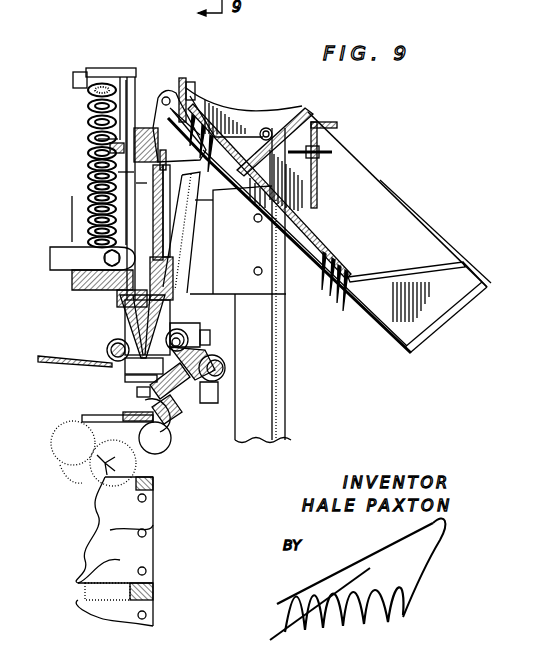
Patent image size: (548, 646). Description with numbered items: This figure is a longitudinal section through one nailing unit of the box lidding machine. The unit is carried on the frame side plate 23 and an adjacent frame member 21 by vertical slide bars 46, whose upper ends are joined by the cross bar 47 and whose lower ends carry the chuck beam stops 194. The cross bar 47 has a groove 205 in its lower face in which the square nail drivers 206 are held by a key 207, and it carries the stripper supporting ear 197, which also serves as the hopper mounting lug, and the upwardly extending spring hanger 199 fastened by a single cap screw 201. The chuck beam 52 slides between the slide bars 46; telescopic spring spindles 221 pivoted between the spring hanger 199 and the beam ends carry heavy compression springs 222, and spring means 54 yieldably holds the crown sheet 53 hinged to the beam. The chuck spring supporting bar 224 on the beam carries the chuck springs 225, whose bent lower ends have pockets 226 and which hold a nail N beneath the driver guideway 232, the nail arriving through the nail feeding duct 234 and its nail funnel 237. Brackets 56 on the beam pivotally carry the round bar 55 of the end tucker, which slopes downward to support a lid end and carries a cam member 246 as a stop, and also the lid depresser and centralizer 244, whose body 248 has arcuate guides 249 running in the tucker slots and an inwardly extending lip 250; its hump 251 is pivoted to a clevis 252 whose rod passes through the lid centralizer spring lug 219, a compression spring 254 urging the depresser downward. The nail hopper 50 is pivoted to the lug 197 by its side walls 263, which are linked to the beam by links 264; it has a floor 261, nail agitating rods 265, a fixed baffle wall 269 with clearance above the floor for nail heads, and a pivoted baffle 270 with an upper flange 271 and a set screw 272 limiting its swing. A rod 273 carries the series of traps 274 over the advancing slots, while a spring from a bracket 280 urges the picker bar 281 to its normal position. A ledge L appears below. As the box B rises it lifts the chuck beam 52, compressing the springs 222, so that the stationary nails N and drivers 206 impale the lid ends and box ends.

The compression spring 222 is at (90, 101).
The spring hanger 199 is at (128, 125).
The cap screw 201 is at (143, 141).
The cross bar 47 is at (140, 147).
The key 207 is at (132, 172).
The nail driver 206 is at (145, 183).
The side plate 23 is at (82, 202).
The slide bar 46 is at (135, 208).
The spring spindle 221 is at (72, 230).
The spring means 54 is at (70, 260).
The driver guideway 232 is at (118, 298).
The chuck spring supporting bar 224 is at (127, 307).
The chuck spring 225 is at (125, 320).
The nail N is at (128, 329).
The crown sheet 53 is at (70, 360).
The chuck beam 52 is at (135, 365).
The chuck beam stop 194 is at (130, 378).
The lip 250 is at (147, 390).
The ledge L is at (97, 418).
The stripper supporting ear 197 is at (150, 122).
The groove 205 is at (155, 163).
The bracket 280 is at (180, 90).
The picker bar 281 is at (192, 88).
The trap 274 is at (237, 140).
The rod 273 is at (266, 128).
The nail hopper 50 is at (426, 218).
The fixed baffle wall 269 is at (303, 112).
The pivoted baffle 270 is at (320, 187).
The flange 271 is at (322, 126).
The set screw 272 is at (328, 152).
The floor 261 is at (313, 238).
The nail agitating rod 265 is at (397, 270).
The side wall 263 is at (443, 255).
The frame column 21 is at (282, 432).
The nail funnel 237 is at (210, 217).
The link 264 is at (195, 233).
The lid centralizer spring lug 219 is at (185, 258).
The compression spring 254 is at (183, 273).
The nail feeding duct 234 is at (183, 287).
The pocket 226 is at (160, 335).
The clevis 252 is at (210, 340).
The hump 251 is at (200, 360).
The lid depresser and centralizer 244 is at (224, 370).
The body 248 is at (208, 393).
The arcuate guide 249 is at (259, 410).
The cam member 246 is at (173, 437).
The bracket 56 is at (162, 453).
The round bar 55 is at (148, 442).
The box B is at (113, 550).